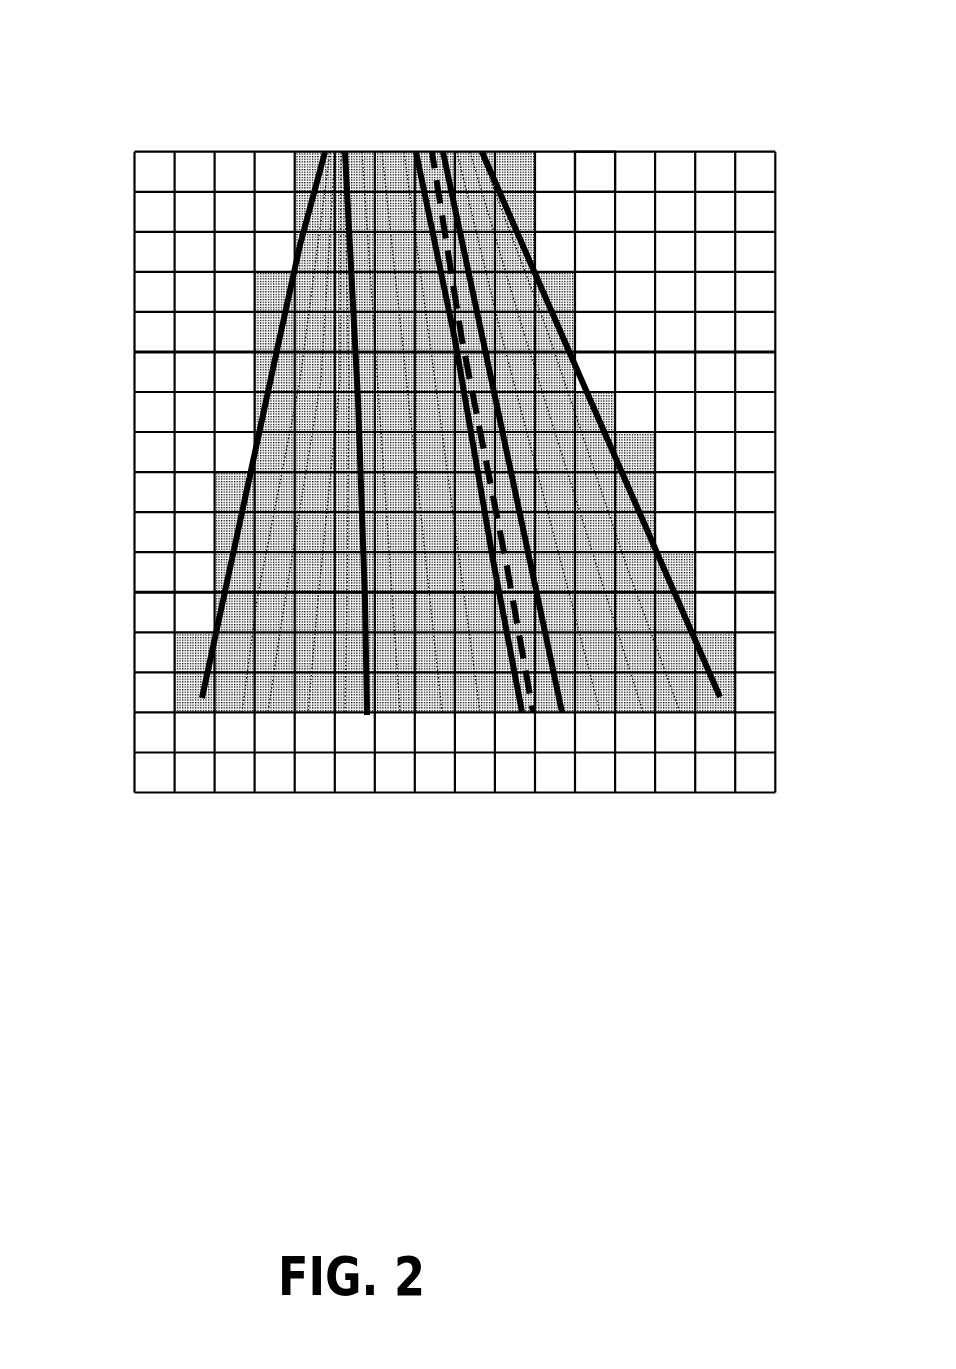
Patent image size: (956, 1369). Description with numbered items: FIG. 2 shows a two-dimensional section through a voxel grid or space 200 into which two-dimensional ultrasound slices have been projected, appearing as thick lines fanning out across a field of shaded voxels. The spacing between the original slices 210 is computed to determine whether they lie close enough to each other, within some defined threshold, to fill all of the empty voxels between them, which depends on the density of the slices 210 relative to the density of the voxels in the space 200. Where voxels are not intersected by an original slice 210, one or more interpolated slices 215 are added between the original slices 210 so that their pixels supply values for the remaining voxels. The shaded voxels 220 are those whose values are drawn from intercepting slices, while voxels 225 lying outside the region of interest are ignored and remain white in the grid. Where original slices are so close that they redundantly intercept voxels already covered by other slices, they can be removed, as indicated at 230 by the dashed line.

The voxel space 200 is at (126, 165).
The original slices 210 is at (314, 178).
The interpolated slices 215 is at (392, 182).
The occupied grid cell 220 is at (520, 170).
The unoccupied grid cell 225 is at (601, 165).
The removed slice 230 is at (434, 158).